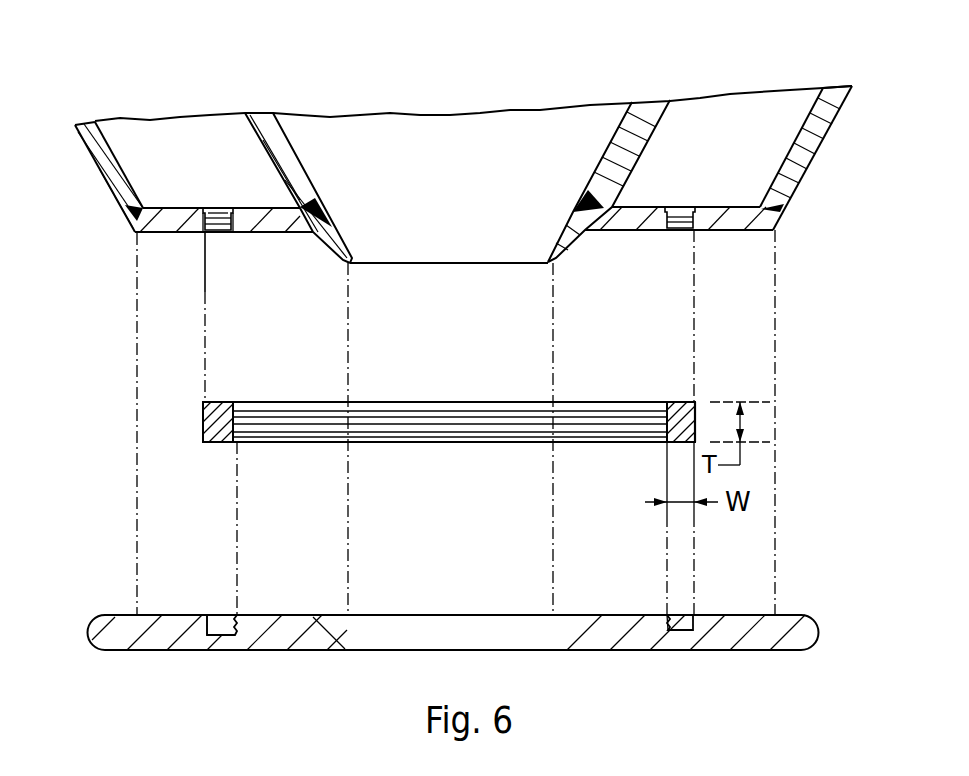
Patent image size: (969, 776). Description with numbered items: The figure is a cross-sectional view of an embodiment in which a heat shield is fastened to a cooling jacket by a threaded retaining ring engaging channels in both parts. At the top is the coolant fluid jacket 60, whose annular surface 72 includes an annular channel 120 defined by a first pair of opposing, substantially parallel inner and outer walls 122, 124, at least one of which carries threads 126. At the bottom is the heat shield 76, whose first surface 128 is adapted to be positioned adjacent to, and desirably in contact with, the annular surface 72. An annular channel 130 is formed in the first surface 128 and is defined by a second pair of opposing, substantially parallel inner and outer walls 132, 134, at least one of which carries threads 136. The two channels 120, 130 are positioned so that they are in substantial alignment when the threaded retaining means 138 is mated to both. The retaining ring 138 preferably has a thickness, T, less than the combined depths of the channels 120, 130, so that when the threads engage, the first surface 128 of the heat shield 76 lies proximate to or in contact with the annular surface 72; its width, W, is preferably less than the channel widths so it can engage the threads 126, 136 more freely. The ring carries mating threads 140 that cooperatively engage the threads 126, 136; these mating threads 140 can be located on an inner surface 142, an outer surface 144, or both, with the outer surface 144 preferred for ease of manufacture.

The coolant fluid jacket 60 is at (102, 173).
The annular surface 72 is at (172, 233).
The inner wall 122 is at (228, 233).
The annular channel 120 is at (222, 252).
The outer wall 124 is at (213, 235).
The threads 126 is at (683, 230).
The threaded retaining means 138 is at (490, 462).
The mating threads 140 is at (203, 428).
The inner surface 142 is at (667, 408).
The outer surface 144 is at (694, 408).
The first surface 128 is at (790, 615).
The heat shield 76 is at (712, 660).
The annular channel 130 is at (690, 600).
The threads 136 is at (667, 613).
The inner wall 132 is at (233, 616).
The outer wall 134 is at (212, 616).